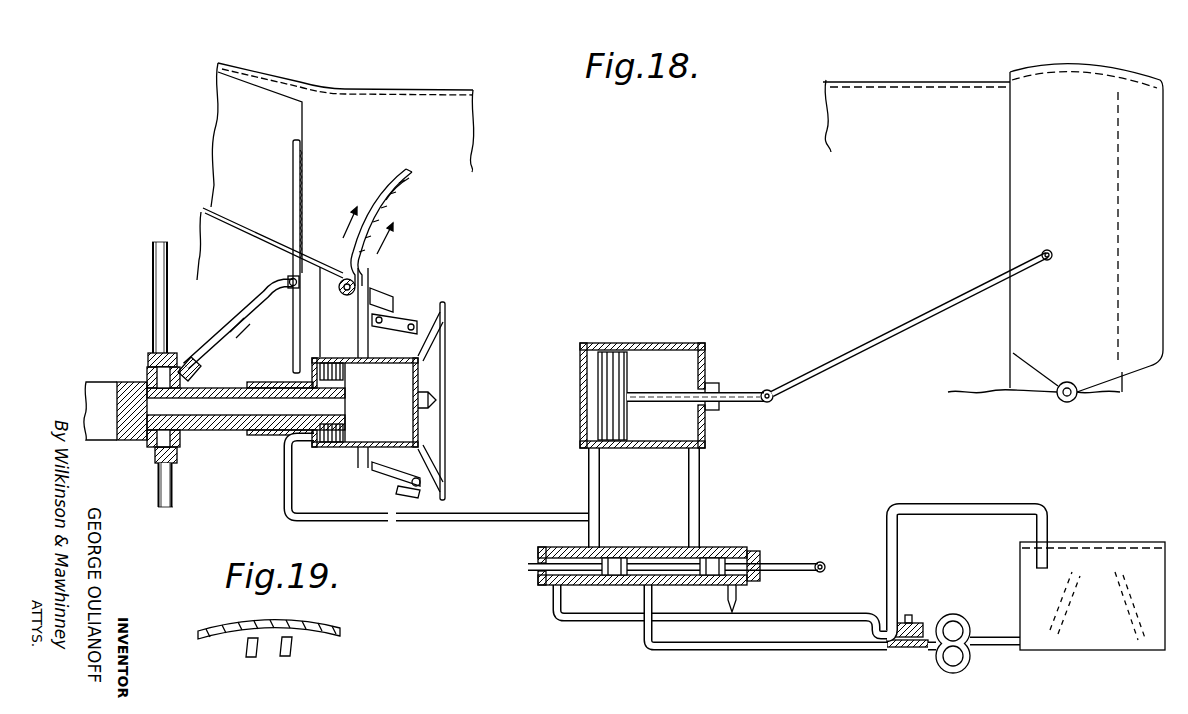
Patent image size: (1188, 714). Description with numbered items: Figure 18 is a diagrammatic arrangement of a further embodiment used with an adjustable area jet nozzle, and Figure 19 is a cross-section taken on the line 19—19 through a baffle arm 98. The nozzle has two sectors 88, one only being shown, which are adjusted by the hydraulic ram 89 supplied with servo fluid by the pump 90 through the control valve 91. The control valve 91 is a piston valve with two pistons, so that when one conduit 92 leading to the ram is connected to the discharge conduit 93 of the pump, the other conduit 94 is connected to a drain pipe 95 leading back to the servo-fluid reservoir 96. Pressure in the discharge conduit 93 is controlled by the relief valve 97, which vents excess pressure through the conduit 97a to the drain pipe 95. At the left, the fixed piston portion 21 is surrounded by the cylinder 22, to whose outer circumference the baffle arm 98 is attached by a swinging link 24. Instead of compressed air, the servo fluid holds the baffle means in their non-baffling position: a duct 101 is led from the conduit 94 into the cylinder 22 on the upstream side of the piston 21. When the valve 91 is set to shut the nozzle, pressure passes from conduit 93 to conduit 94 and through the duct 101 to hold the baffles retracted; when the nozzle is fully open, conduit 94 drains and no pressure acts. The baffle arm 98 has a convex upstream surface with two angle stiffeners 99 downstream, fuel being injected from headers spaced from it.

In FIG. 18, the section line 19 is at (374, 234).
In FIG. 18, the piston portion 21 is at (346, 375).
In FIG. 18, the cylinder 22 is at (345, 447).
In FIG. 18, the swinging links 24 is at (403, 321).
In FIG. 18, the sector 88 is at (1023, 198).
In FIG. 18, the hydraulic ram 89 is at (652, 342).
In FIG. 18, the pump 90 is at (970, 619).
In FIG. 18, the control valve 91 is at (722, 547).
In FIG. 18, the conduit 92 is at (700, 474).
In FIG. 18, the discharge conduit 93 is at (643, 646).
In FIG. 18, the conduit 94 is at (600, 474).
In FIG. 18, the drain pipe 95 is at (790, 613).
In FIG. 18, the servo-fluid reservoir 96 is at (1143, 542).
In FIG. 18, the relief valve 97 is at (293, 178).
In FIG. 18, the conduit 97a is at (878, 627).
In FIG. 18, the baffle arm 98 is at (393, 187).
In FIG. 19, the baffle arm 98 is at (212, 632).
In FIG. 18, the angle stiffeners 99 is at (402, 190).
In FIG. 19, the angle stiffeners 99 is at (285, 656).
In FIG. 18, the duct 101 is at (486, 513).